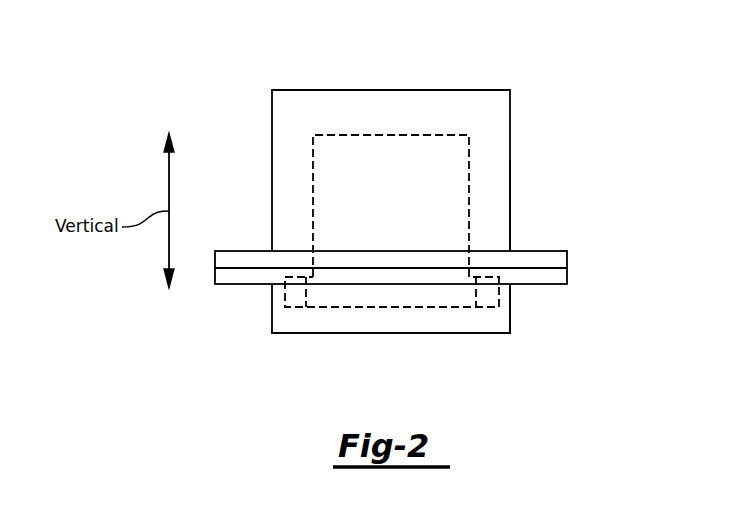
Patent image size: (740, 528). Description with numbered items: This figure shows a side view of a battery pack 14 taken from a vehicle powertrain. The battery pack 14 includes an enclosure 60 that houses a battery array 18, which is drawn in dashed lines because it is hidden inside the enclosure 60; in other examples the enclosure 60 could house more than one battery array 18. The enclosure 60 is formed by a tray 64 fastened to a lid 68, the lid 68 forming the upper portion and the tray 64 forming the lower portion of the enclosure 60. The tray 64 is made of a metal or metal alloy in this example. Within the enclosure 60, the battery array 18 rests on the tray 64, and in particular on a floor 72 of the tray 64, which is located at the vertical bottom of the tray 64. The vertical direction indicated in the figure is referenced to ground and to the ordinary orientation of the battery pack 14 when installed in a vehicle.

The battery pack 14 is at (468, 62).
The battery array 18 is at (351, 135).
The enclosure 60 is at (510, 146).
The lid 68 is at (510, 208).
The tray 64 is at (510, 310).
The floor 72 is at (462, 333).